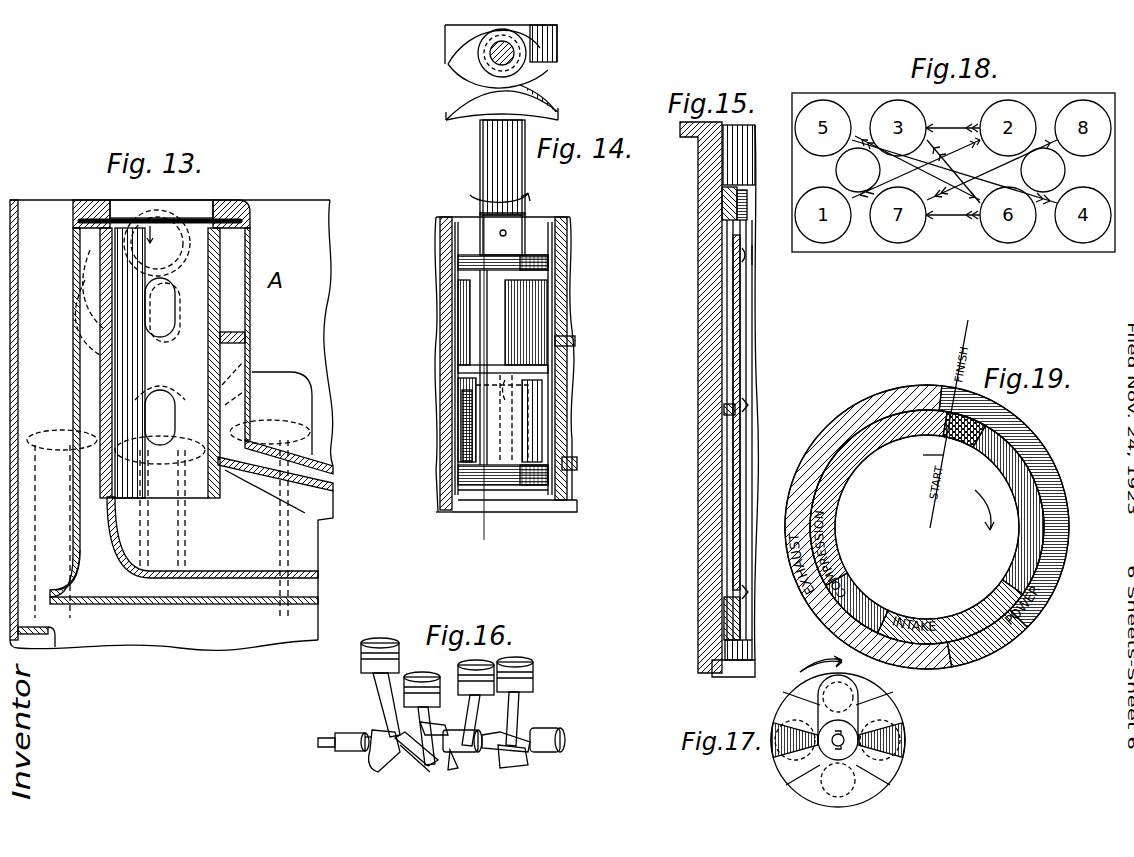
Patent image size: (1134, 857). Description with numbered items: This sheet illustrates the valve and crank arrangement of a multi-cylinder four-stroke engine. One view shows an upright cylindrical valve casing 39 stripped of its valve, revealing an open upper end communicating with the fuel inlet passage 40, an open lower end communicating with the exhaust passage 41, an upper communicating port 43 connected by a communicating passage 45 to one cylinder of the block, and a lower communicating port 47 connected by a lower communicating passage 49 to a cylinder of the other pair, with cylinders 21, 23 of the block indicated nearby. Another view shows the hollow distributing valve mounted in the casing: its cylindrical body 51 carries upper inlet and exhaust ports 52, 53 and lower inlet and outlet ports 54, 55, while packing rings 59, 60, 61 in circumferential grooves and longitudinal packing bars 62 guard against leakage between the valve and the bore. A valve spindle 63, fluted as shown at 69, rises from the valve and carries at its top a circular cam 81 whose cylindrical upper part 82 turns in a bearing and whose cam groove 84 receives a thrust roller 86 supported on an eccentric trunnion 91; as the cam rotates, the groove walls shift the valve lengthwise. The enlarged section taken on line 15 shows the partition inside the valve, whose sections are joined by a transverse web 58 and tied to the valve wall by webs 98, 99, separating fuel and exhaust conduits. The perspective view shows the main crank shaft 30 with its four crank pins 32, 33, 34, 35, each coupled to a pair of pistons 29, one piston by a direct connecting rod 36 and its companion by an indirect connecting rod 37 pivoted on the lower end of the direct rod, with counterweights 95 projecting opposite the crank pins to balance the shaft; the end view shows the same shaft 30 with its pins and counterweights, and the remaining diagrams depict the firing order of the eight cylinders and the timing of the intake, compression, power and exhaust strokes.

In FIG. 14, the section line 15 is at (480, 248).
In FIG. 13, the cylinder 21 is at (45, 621).
In FIG. 13, the cylinder 23 is at (285, 553).
In FIG. 16, the piston 29 is at (530, 690).
In FIG. 16, the main crank shaft 30 is at (500, 750).
In FIG. 17, the main crank shaft 30 is at (860, 748).
In FIG. 16, the crank pin 32 is at (372, 730).
In FIG. 17, the crank pin 32 is at (838, 707).
In FIG. 16, the crank pin 33 is at (430, 768).
In FIG. 17, the crank pin 33 is at (800, 790).
In FIG. 16, the crank pin 34 is at (476, 753).
In FIG. 17, the crank pin 34 is at (778, 725).
In FIG. 16, the crank pin 35 is at (530, 752).
In FIG. 17, the crank pin 35 is at (900, 722).
In FIG. 16, the direct connecting rod 36 is at (520, 717).
In FIG. 16, the indirect connecting rod 37 is at (512, 720).
In FIG. 13, the cylindrical valve casing 39 is at (212, 305).
In FIG. 14, the cylindrical valve casing 39 is at (445, 252).
In FIG. 15, the cylindrical valve casing 39 is at (700, 322).
In FIG. 13, the fuel inlet passage 40 is at (225, 205).
In FIG. 14, the fuel inlet passage 40 is at (555, 222).
In FIG. 13, the exhaust passage 41 is at (220, 509).
In FIG. 14, the exhaust passage 41 is at (522, 500).
In FIG. 13, the upper communicating port 43 is at (162, 310).
In FIG. 13, the communicating passage 45 is at (78, 232).
In FIG. 13, the lower communicating port 47 is at (160, 425).
In FIG. 13, the lower communicating passage 49 is at (243, 372).
In FIG. 14, the cylindrical body 51 is at (462, 416).
In FIG. 15, the cylindrical body 51 is at (726, 204).
In FIG. 14, the inlet port 52 is at (545, 310).
In FIG. 14, the exhaust port 53 is at (462, 305).
In FIG. 14, the inlet port 54 is at (462, 386).
In FIG. 14, the outlet port 55 is at (560, 393).
In FIG. 15, the transverse web 58 is at (742, 406).
In FIG. 14, the packing ring 59 is at (552, 262).
In FIG. 15, the packing ring 59 is at (726, 193).
In FIG. 14, the packing ring 60 is at (560, 376).
In FIG. 15, the packing ring 60 is at (724, 410).
In FIG. 14, the packing ring 61 is at (560, 473).
In FIG. 15, the packing ring 61 is at (724, 605).
In FIG. 14, the longitudinal packing bar 62 is at (485, 434).
In FIG. 15, the longitudinal packing bar 62 is at (727, 533).
In FIG. 14, the valve spindle 63 is at (480, 155).
In FIG. 14, the fluted portion 69 is at (507, 138).
In FIG. 14, the circular cam 81 is at (556, 42).
In FIG. 14, the cylindrical upper part 82 is at (460, 37).
In FIG. 14, the cam groove 84 is at (542, 70).
In FIG. 14, the thrust roller 86 is at (482, 68).
In FIG. 14, the trunnion 91 is at (492, 56).
In FIG. 16, the counterweight 95 is at (510, 768).
In FIG. 17, the counterweight 95 is at (878, 785).
In FIG. 15, the web 98 is at (748, 255).
In FIG. 15, the web 99 is at (750, 590).